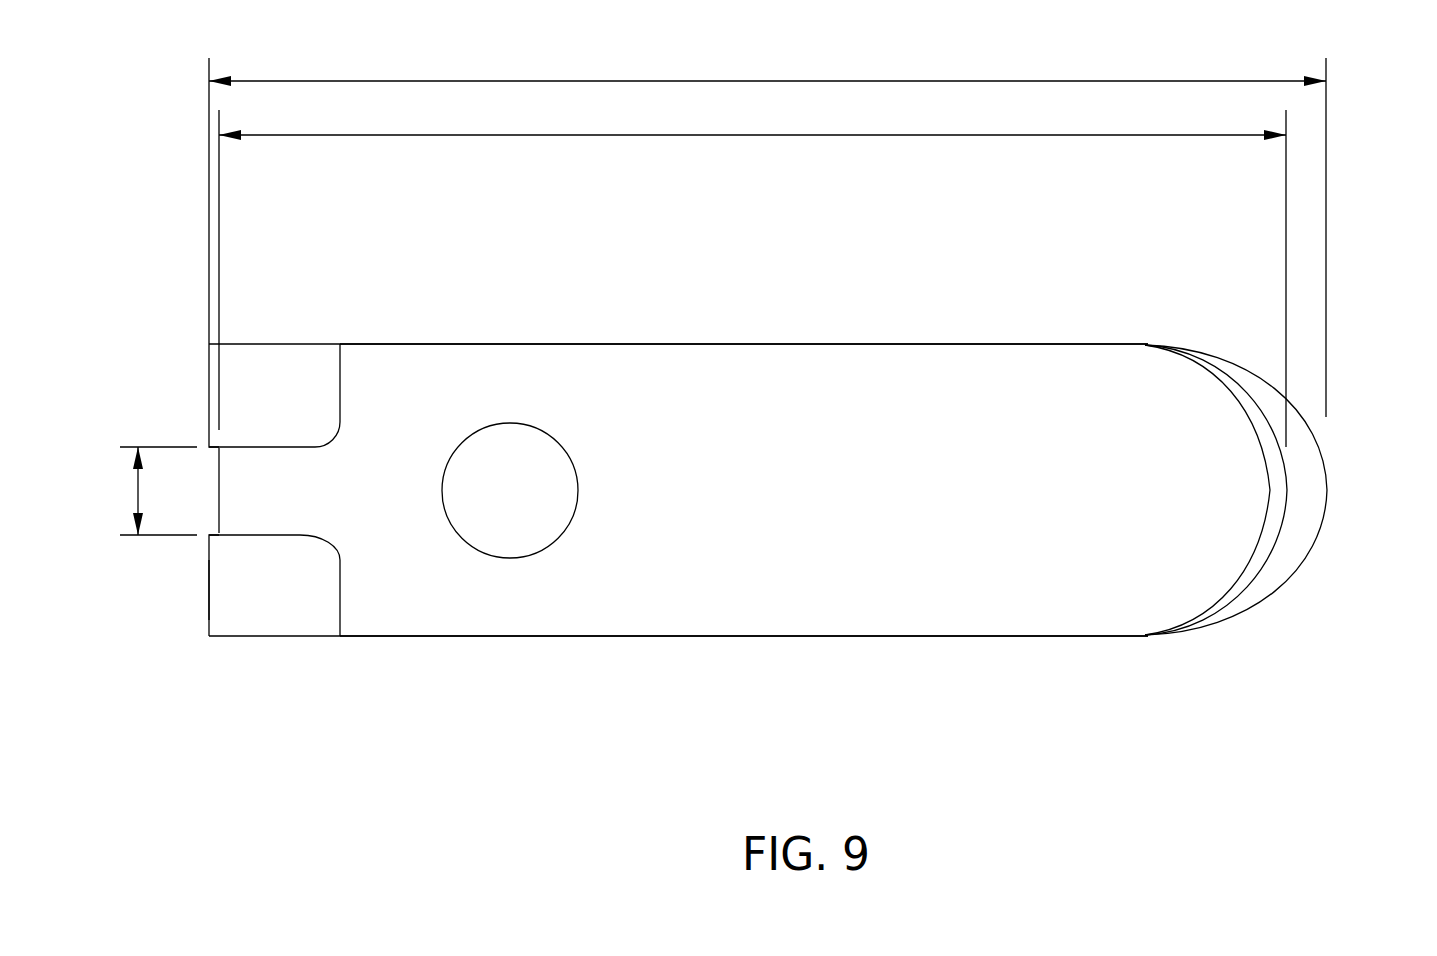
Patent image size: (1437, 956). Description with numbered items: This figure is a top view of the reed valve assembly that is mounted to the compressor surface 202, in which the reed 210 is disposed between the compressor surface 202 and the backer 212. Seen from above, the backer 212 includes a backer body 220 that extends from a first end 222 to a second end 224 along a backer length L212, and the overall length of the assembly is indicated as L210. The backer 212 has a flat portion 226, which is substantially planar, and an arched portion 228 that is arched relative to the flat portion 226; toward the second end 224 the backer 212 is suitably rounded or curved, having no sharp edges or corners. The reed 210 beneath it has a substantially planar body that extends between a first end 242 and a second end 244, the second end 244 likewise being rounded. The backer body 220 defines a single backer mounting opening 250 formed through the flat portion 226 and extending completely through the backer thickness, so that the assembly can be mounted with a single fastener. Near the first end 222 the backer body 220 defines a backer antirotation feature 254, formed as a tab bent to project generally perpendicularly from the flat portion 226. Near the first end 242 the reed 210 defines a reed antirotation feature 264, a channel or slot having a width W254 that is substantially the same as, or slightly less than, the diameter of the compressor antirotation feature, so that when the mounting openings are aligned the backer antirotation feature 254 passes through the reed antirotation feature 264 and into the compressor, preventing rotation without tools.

The compressor surface 202 is at (708, 328).
The reed 210 is at (278, 603).
The backer 212 is at (832, 577).
The backer body 220 is at (1052, 548).
The first end 222 is at (205, 480).
The second end 224 is at (1290, 501).
The flat portion 226 is at (435, 377).
The arched portion 228 is at (970, 368).
The first end 242 is at (197, 597).
The second end 244 is at (1329, 498).
The backer mounting opening 250 is at (487, 558).
The backer antirotation feature 254 is at (289, 483).
The reed antirotation feature 264 is at (262, 447).
The overall length L210 is at (767, 81).
The backer length L212 is at (740, 135).
The width of reed antirotation feature W254 is at (138, 488).